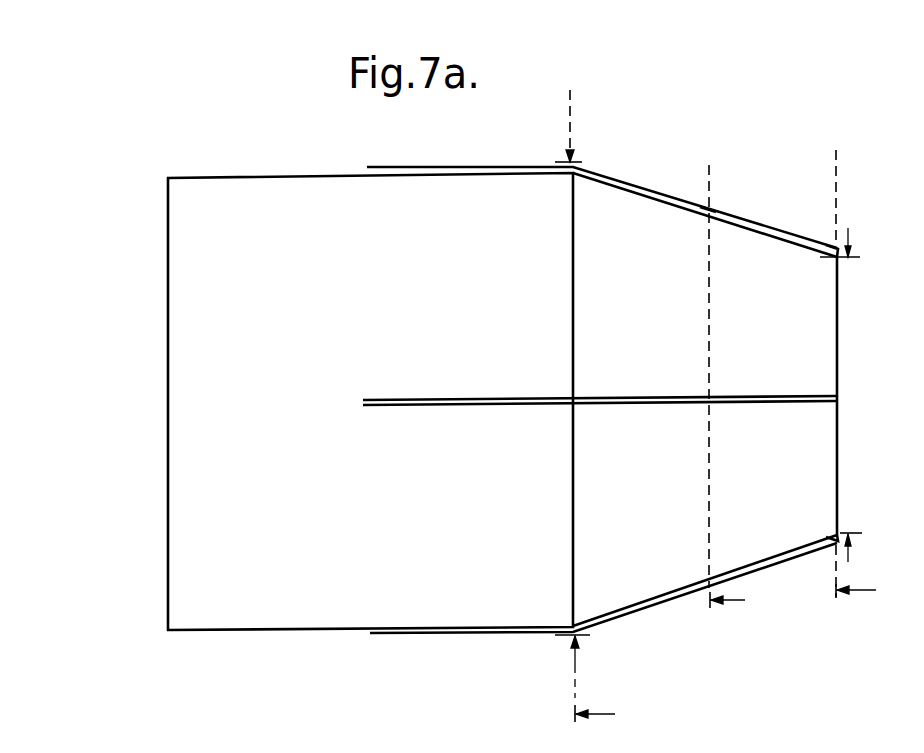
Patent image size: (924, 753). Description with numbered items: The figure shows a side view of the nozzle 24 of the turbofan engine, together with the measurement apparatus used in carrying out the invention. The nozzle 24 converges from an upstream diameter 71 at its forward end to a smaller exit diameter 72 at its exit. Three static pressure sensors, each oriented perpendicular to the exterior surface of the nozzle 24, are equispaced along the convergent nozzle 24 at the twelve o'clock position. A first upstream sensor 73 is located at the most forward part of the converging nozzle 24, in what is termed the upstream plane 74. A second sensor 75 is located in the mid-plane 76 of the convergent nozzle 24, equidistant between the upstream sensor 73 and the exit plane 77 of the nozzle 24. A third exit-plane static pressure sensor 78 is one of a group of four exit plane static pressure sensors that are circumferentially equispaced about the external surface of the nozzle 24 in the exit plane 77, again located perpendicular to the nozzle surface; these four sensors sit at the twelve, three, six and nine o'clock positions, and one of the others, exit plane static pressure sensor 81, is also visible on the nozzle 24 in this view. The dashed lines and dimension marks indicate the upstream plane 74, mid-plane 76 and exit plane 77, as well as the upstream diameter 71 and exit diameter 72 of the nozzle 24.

The nozzle 24 is at (300, 145).
The upstream diameter 71 is at (583, 430).
The exit diameter 72 is at (858, 551).
The upstream sensor 73 is at (582, 164).
The upstream plane 74 is at (610, 715).
The second sensor 75 is at (716, 206).
The mid-plane 76 is at (743, 604).
The exit plane 77 is at (872, 590).
The exit-plane static pressure sensor 78 is at (839, 241).
The exit plane static pressure sensor 81 is at (835, 399).